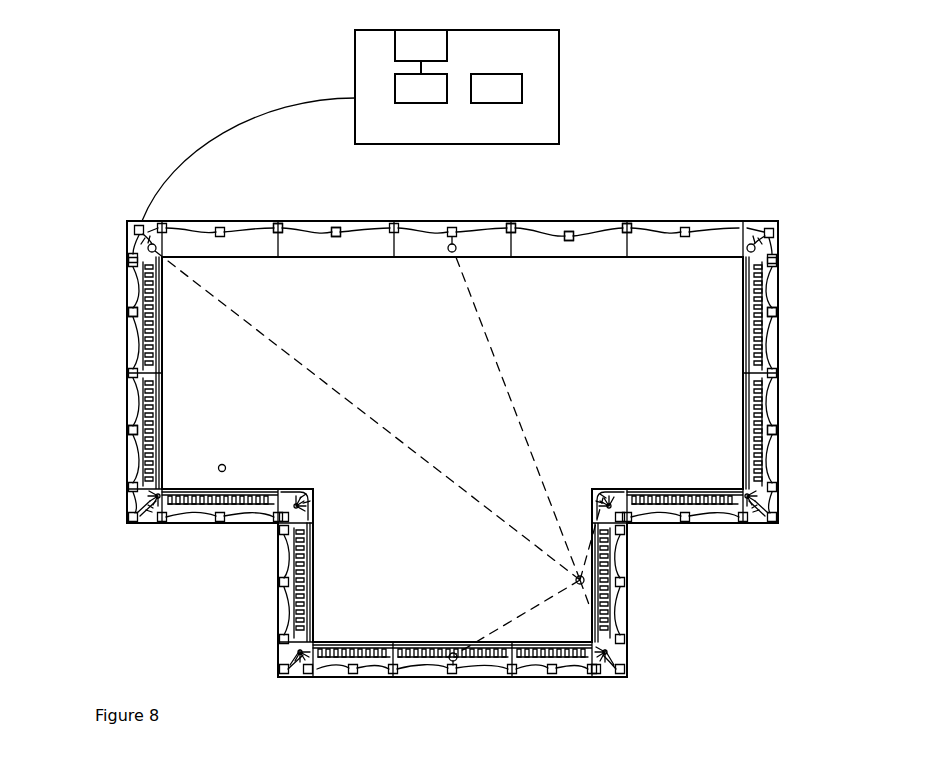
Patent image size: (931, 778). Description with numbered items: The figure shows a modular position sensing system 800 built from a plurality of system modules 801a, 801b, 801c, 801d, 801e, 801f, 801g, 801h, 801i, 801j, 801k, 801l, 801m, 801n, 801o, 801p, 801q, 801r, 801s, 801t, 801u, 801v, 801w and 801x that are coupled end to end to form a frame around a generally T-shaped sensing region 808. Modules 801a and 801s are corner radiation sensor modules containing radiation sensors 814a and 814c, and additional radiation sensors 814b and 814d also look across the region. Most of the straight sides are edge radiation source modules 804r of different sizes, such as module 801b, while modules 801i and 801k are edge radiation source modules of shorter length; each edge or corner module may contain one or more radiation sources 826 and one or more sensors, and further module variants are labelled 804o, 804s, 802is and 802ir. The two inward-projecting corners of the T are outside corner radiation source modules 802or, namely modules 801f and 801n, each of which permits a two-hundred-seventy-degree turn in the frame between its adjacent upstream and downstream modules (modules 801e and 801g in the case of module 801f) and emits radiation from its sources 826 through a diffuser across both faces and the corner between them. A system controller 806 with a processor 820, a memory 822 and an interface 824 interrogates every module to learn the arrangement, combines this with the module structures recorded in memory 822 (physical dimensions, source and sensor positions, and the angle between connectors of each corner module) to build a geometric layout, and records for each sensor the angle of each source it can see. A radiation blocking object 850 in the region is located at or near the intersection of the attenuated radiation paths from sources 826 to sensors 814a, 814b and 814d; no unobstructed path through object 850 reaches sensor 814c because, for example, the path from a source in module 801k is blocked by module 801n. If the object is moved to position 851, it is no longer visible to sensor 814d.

The modular position sensing system 800 is at (170, 122).
The corner radiation sensor module 801a is at (139, 232).
The edge radiation source module 801b is at (133, 288).
The system module 801c is at (133, 395).
The system module 801d is at (130, 512).
The system module 801e is at (183, 525).
The outside corner radiation source module 801f is at (292, 490).
The system module 801g is at (280, 580).
The system module 801h is at (292, 680).
The edge radiation source module 801i is at (350, 680).
The system module 801j is at (437, 680).
The edge radiation source module 801k is at (545, 680).
The system module 801l is at (608, 680).
The system module 801m is at (628, 600).
The outside corner radiation source module 801n is at (603, 492).
The system module 801o is at (685, 525).
The system module 801p is at (778, 510).
The system module 801q is at (778, 462).
The system module 801r is at (778, 350).
The corner radiation sensor module 801s is at (778, 240).
The system module 801t is at (690, 221).
The system module 801u is at (585, 221).
The system module 801v is at (428, 221).
The system module 801w is at (345, 221).
The system module 801x is at (243, 221).
The inner straight corner connector 802is is at (130, 245).
The inner right corner connector 802ir is at (135, 525).
The outside corner radiation source module 802or is at (317, 508).
The sensor unit (occupancy) 804o is at (262, 221).
The edge radiation source module 804r is at (130, 330).
The sensor unit 804s is at (472, 221).
The system controller 806 is at (473, 134).
The sensing region 808 is at (622, 360).
The radiation sensor 814a is at (163, 250).
The radiation sensor 814b is at (452, 252).
The radiation sensor 814c is at (748, 252).
The radiation sensor 814d is at (452, 652).
The processor 820 is at (436, 98).
The memory 822 is at (512, 98).
The interface 824 is at (436, 54).
The radiation source 826 is at (155, 416).
The radiation blocking object 850 is at (575, 580).
The position 851 is at (225, 466).